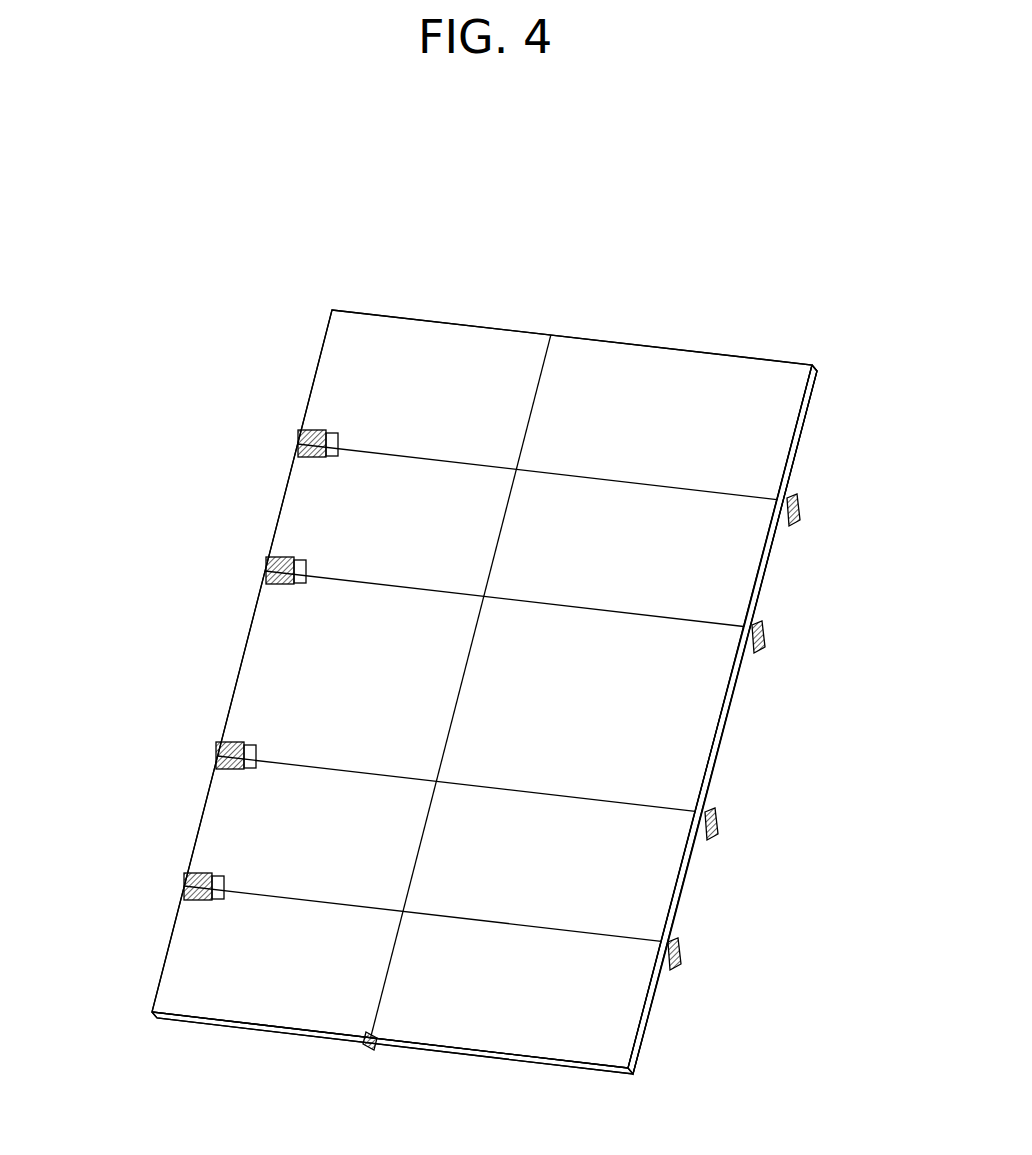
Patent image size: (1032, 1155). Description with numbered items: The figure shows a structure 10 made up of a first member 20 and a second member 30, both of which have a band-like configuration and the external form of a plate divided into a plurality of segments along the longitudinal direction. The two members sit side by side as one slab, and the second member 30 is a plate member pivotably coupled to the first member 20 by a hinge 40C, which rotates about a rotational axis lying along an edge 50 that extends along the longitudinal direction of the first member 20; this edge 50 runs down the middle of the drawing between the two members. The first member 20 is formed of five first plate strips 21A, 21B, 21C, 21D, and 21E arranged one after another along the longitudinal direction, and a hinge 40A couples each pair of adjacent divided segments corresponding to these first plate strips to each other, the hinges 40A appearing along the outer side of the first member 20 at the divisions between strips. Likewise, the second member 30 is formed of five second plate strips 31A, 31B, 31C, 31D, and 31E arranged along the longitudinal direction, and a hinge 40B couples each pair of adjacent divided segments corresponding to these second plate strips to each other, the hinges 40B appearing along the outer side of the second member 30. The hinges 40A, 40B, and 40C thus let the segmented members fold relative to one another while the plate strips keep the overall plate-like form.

The structure 10 is at (622, 238).
The first member 20 is at (688, 334).
The second member 30 is at (450, 312).
The edge 50 is at (459, 692).
The second plate strip 31A is at (325, 371).
The second plate strip 31B is at (298, 508).
The second plate strip 31C is at (253, 675).
The second plate strip 31D is at (218, 815).
The second plate strip 31E is at (180, 965).
The first plate strip 21A is at (765, 437).
The first plate strip 21B is at (738, 585).
The first plate strip 21C is at (695, 730).
The first plate strip 21D is at (655, 897).
The first plate strip 21E is at (623, 1027).
The hinge 40A is at (799, 500).
The hinge 40B is at (300, 432).
The hinge 40C is at (365, 1047).